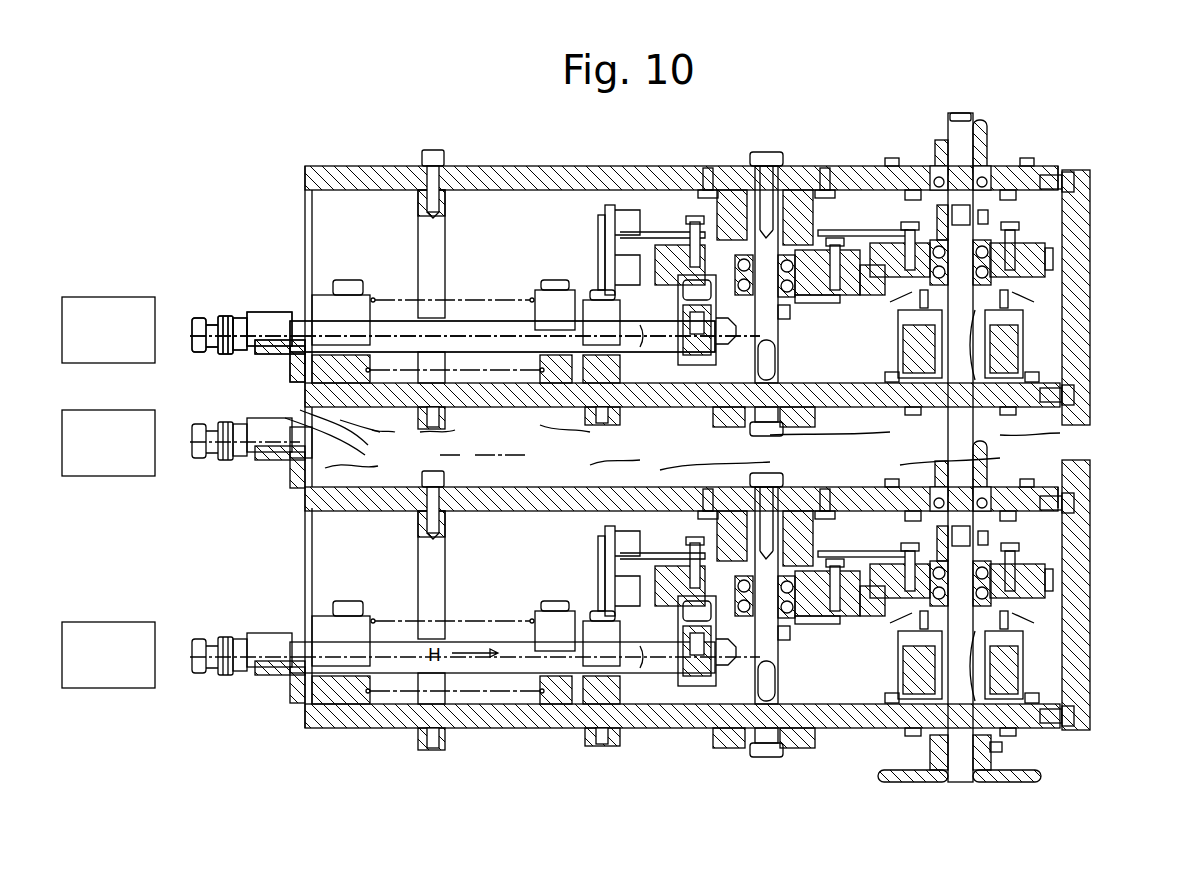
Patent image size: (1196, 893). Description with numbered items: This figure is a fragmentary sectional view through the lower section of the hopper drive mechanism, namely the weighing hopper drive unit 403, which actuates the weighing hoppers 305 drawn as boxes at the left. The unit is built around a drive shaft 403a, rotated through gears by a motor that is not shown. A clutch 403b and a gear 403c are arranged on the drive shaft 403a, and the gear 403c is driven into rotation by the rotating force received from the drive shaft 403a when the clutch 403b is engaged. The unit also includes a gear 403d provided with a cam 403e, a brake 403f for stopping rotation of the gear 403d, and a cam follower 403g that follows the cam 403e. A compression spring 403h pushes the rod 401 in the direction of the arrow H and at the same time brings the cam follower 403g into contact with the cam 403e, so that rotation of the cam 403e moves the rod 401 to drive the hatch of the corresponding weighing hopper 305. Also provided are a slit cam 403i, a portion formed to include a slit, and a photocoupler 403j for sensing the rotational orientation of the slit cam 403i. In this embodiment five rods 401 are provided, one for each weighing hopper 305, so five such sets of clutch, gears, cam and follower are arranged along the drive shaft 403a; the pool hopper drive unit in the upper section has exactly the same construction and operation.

The weighing hopper 305 is at (108, 318).
The rod 401 is at (212, 666).
The weighing hopper drive unit 403 is at (1108, 242).
The drive shaft 403a is at (955, 784).
The clutch 403b is at (1035, 668).
The gear 403c is at (1048, 582).
The gear 403d is at (845, 638).
The cam 403e is at (840, 630).
The brake 403f is at (800, 520).
The cam follower 403g is at (680, 632).
The compression spring 403h is at (481, 698).
The slit cam 403i is at (675, 545).
The photocoupler 403j is at (645, 540).